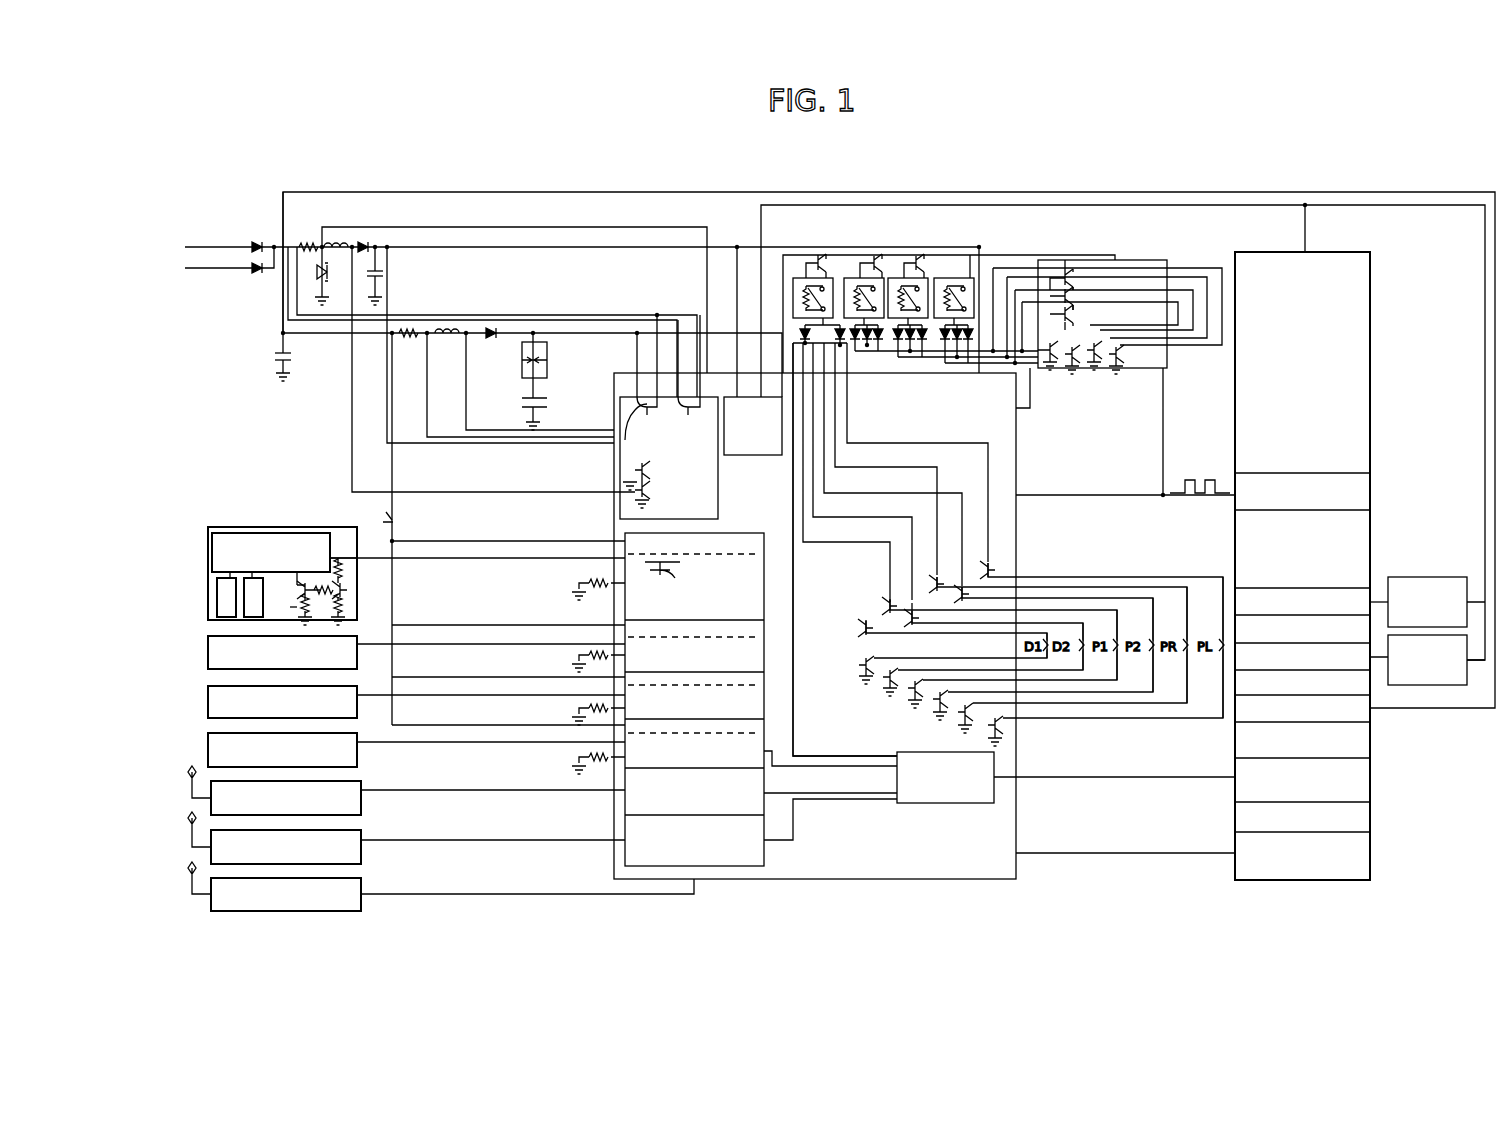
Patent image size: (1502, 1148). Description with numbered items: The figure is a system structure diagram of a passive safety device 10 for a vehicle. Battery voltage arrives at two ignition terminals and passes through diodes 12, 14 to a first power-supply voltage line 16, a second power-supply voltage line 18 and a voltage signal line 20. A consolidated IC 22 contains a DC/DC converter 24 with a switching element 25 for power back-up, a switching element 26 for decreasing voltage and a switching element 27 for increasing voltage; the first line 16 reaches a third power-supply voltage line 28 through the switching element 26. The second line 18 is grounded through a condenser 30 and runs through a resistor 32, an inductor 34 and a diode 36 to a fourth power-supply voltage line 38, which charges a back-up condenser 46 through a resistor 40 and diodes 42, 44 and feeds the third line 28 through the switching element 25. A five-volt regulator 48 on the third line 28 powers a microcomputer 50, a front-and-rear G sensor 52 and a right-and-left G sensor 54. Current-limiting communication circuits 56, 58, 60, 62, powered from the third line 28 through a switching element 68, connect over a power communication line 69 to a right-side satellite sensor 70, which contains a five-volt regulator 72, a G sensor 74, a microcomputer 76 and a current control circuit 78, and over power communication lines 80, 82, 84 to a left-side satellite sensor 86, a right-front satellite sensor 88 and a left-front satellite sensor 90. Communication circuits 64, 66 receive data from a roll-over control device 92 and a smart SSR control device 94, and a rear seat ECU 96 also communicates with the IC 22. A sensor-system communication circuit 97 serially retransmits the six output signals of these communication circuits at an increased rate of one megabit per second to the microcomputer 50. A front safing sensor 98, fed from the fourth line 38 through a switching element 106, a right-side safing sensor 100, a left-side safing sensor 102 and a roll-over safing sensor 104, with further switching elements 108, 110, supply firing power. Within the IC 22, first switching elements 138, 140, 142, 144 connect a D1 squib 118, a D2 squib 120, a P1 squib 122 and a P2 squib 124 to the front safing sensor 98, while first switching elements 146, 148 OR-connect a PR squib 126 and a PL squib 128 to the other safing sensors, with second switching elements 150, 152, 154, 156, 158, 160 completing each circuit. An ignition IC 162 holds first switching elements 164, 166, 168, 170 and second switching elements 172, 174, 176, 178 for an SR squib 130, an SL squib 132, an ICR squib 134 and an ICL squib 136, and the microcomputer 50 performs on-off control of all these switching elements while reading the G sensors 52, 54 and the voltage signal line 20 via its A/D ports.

The passive safety device 10 is at (853, 879).
The diode 12 is at (257, 240).
The diode 14 is at (252, 273).
The first power-supply voltage line 16 is at (290, 246).
The second power-supply voltage line 18 is at (283, 313).
The voltage signal line 20 is at (326, 192).
The consolidated IC 22 is at (952, 879).
The DC/DC converter 24 is at (718, 501).
The switching element for back-up of power supply 25 is at (625, 445).
The switching element for decreasing voltage 26 is at (702, 397).
The switching element for increasing voltage 27 is at (655, 493).
The third power-supply voltage line 28 is at (548, 313).
The condenser 30 is at (292, 357).
The resistor 32 is at (408, 338).
The inductor 34 is at (440, 338).
The diode 36 is at (490, 338).
The fourth power-supply voltage line 38 is at (562, 335).
The resistor 40 is at (516, 370).
The diode 42 is at (548, 386).
The diode 44 is at (550, 362).
The back-up condenser 46 is at (550, 413).
The 5-volt regulator 48 is at (768, 455).
The microcomputer 50 is at (1370, 320).
The front-and-rear G sensor 52 is at (1424, 577).
The right-and-left G sensor 54 is at (1430, 685).
The current-limiting communication circuit 56 is at (774, 564).
The current-limiting communication circuit 58 is at (776, 616).
The current-limiting communication circuit 60 is at (764, 692).
The current-limiting communication circuit 62 is at (624, 768).
The communication circuit 64 is at (624, 814).
The communication circuit 66 is at (624, 858).
The switching element 68 is at (404, 518).
The power communication line 69 is at (488, 560).
The right-side satellite sensor 70 is at (232, 527).
The 5-volt regulator 72 is at (208, 553).
The G sensor 74 is at (217, 599).
The microcomputer 76 is at (260, 606).
The current control circuit 78 is at (347, 586).
The power communication line 80 is at (490, 644).
The power communication line 82 is at (493, 695).
The power communication line 84 is at (491, 742).
The left-side satellite sensor 86 is at (208, 654).
The right-front satellite sensor 88 is at (208, 701).
The left-front satellite sensor 90 is at (208, 744).
The roll-over control device 92 is at (361, 813).
The smart SSR control device 94 is at (361, 859).
The rear seat electronic control unit 96 is at (367, 910).
The sensor-system communication circuit 97 is at (944, 804).
The front safing sensor 98 is at (798, 278).
The right-side safing sensor 100 is at (850, 278).
The left-side safing sensor 102 is at (896, 278).
The roll-over safing sensor 104 is at (952, 278).
The switching element 106 is at (810, 258).
The switching element 108 is at (870, 258).
The switching element 110 is at (922, 258).
The D1 squib 118 is at (1052, 593).
The D2 squib 120 is at (1084, 587).
The P1 squib 122 is at (1122, 593).
The P2 squib 124 is at (1164, 587).
The PR squib 126 is at (1178, 696).
The PL squib 128 is at (1222, 696).
The SR squib 130 is at (1194, 296).
The SL squib 132 is at (1220, 298).
The ICR squib 134 is at (1194, 334).
The ICL squib 136 is at (1224, 350).
The first switching element 138 is at (864, 633).
The first switching element 140 is at (890, 610).
The first switching element 142 is at (912, 622).
The first switching element 144 is at (937, 584).
The first switching element 146 is at (962, 604).
The first switching element 148 is at (985, 570).
The second switching element 150 is at (864, 678).
The second switching element 152 is at (888, 690).
The second switching element 154 is at (910, 704).
The second switching element 156 is at (940, 712).
The second switching element 158 is at (968, 728).
The second switching element 160 is at (1004, 732).
The ignition IC 162 is at (1140, 260).
The first switching element 164 is at (1070, 308).
The first switching element 166 is at (1072, 290).
The first switching element 168 is at (1062, 272).
The first switching element 170 is at (1067, 270).
The second switching element 172 is at (1052, 362).
The second switching element 174 is at (1078, 368).
The second switching element 176 is at (1102, 342).
The second switching element 178 is at (1124, 364).